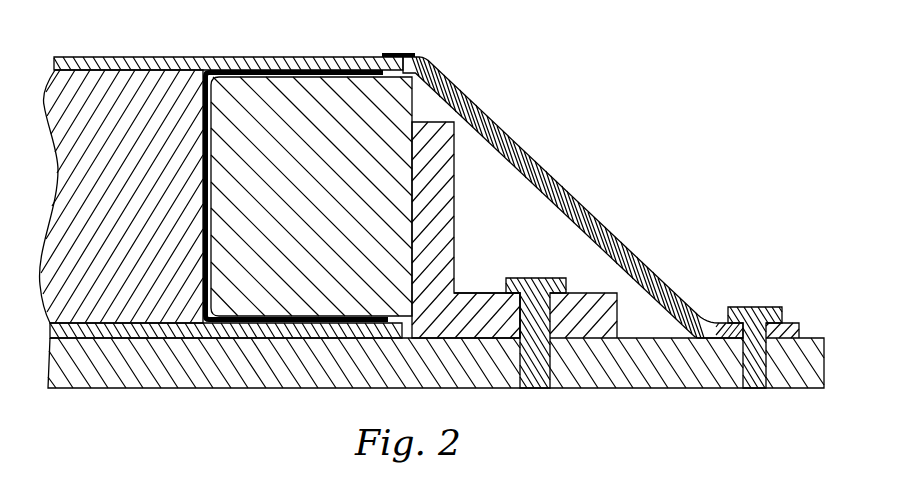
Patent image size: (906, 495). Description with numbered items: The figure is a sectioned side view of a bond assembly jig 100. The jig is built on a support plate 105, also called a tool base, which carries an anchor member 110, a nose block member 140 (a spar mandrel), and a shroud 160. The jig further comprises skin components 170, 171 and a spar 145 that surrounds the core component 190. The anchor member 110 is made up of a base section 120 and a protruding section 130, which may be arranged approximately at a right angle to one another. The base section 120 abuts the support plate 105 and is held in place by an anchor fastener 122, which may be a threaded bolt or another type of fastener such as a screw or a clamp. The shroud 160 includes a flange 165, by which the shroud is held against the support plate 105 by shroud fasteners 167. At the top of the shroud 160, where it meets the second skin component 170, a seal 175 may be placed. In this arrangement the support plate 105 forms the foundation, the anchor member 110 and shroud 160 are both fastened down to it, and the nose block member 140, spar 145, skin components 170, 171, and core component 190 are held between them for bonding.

The bond assembly jig 100 is at (563, 66).
The support plate 105 is at (278, 367).
The anchor member 110 is at (491, 318).
The base section 120 is at (495, 313).
The anchor fastener 122 is at (561, 281).
The protruding section 130 is at (437, 193).
The nose block member 140 is at (328, 206).
The spar 145 is at (293, 71).
The shroud 160 is at (541, 165).
The flange 165 is at (798, 322).
The shroud fasteners 167 is at (748, 307).
The skin component 170 is at (145, 61).
The skin component 171 is at (105, 330).
The seal 175 is at (403, 54).
The core component 190 is at (149, 206).